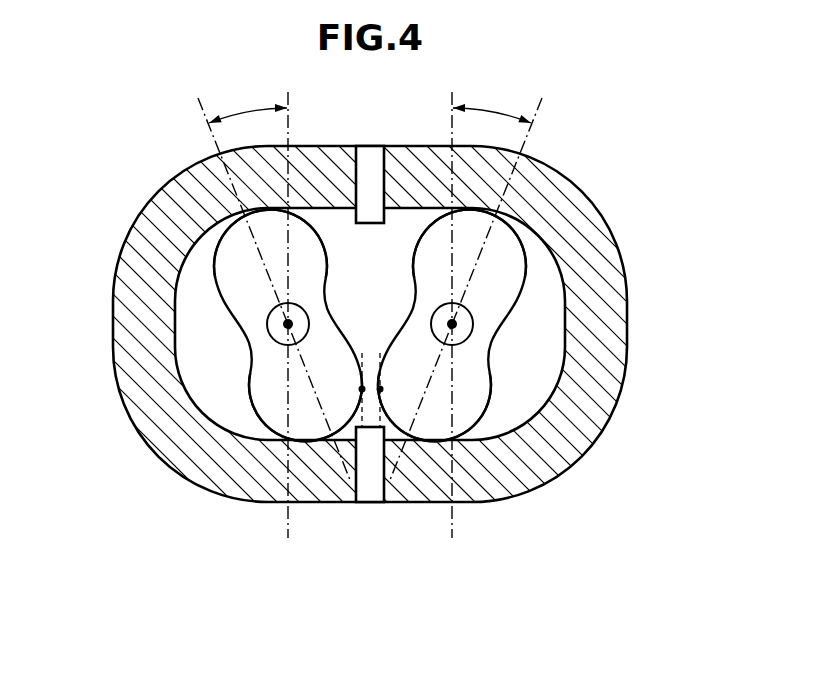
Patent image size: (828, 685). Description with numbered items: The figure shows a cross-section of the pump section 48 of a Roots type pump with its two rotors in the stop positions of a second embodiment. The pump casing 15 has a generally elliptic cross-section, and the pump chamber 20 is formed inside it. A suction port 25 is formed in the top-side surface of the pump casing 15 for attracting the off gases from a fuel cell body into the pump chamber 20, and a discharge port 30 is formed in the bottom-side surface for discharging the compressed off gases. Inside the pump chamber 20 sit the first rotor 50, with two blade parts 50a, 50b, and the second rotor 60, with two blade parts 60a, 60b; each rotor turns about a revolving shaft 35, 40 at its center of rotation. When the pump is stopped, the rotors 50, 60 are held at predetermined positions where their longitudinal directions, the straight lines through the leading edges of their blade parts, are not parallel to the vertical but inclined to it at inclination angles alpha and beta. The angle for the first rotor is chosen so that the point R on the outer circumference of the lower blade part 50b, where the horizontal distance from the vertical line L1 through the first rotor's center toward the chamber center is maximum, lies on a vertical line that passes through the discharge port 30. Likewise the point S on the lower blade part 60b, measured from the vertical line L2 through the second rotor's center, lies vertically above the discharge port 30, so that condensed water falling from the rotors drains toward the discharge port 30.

The pump casing 15 is at (600, 247).
The pump chamber 20 is at (542, 353).
The suction port 25 is at (372, 146).
The discharge port 30 is at (373, 504).
The first rotor shaft 35 is at (267, 324).
The second rotor shaft 40 is at (473, 324).
The pump section 48 is at (102, 160).
The rotor 50 is at (270, 382).
The blade part 50a is at (237, 240).
The lower blade part 50b is at (277, 385).
The rotor 60 is at (470, 382).
The blade part 60a is at (503, 240).
The lower blade part 60b is at (463, 385).
The vertical line L1 is at (286, 329).
The vertical line L2 is at (451, 329).
The point R is at (360, 389).
The point S is at (382, 389).